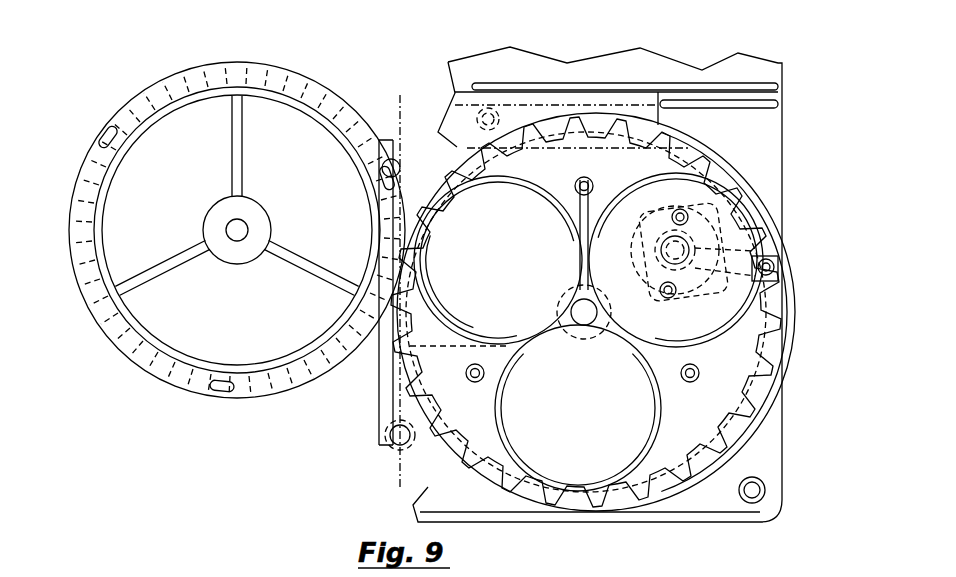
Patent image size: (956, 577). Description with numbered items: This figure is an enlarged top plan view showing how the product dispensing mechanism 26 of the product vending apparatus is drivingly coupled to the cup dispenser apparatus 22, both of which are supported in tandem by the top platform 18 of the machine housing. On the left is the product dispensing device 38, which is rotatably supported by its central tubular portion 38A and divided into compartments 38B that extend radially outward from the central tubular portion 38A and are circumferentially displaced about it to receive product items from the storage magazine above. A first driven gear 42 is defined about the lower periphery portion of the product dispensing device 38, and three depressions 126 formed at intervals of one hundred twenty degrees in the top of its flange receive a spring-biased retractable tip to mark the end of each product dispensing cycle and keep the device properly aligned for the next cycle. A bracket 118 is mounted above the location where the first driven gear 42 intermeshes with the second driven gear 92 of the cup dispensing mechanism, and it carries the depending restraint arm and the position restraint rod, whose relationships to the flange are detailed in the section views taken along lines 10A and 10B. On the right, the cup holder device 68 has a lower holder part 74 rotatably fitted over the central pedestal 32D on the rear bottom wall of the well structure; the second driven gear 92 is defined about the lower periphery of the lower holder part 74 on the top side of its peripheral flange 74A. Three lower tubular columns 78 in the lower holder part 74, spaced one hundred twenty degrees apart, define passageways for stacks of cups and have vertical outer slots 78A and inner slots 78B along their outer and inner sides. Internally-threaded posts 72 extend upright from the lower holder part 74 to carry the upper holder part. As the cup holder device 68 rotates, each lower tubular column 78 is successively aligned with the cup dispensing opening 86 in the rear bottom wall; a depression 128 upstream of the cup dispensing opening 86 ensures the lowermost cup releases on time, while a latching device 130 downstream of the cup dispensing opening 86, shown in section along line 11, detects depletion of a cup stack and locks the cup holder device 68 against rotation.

The product dispensing mechanism 26 is at (182, 66).
The product dispensing device 38 is at (342, 90).
The central tubular portion 38A is at (205, 231).
The compartment 38B is at (156, 182).
The first driven gear 42 is at (276, 396).
The depression 126 is at (106, 134).
The section line 10A is at (345, 214).
The section line 10B is at (345, 185).
The bracket 118 is at (440, 103).
The cup dispenser apparatus 22 is at (660, 54).
The top platform 18 is at (747, 465).
The lower holder part 74 is at (768, 210).
The peripheral flange 74A is at (462, 455).
The lower tubular columns 78 is at (440, 328).
The outer slots 78A is at (700, 173).
The inner slots 78B is at (581, 268).
The cup dispensing opening 86 is at (509, 253).
The depression 128 is at (508, 403).
The central pedestal 32D is at (585, 338).
The internally-threaded posts 72 is at (592, 183).
The latching device 130 is at (733, 282).
The section line 11 is at (822, 247).
The second driven gear 92 is at (478, 470).
The cup holder device 68 is at (583, 499).